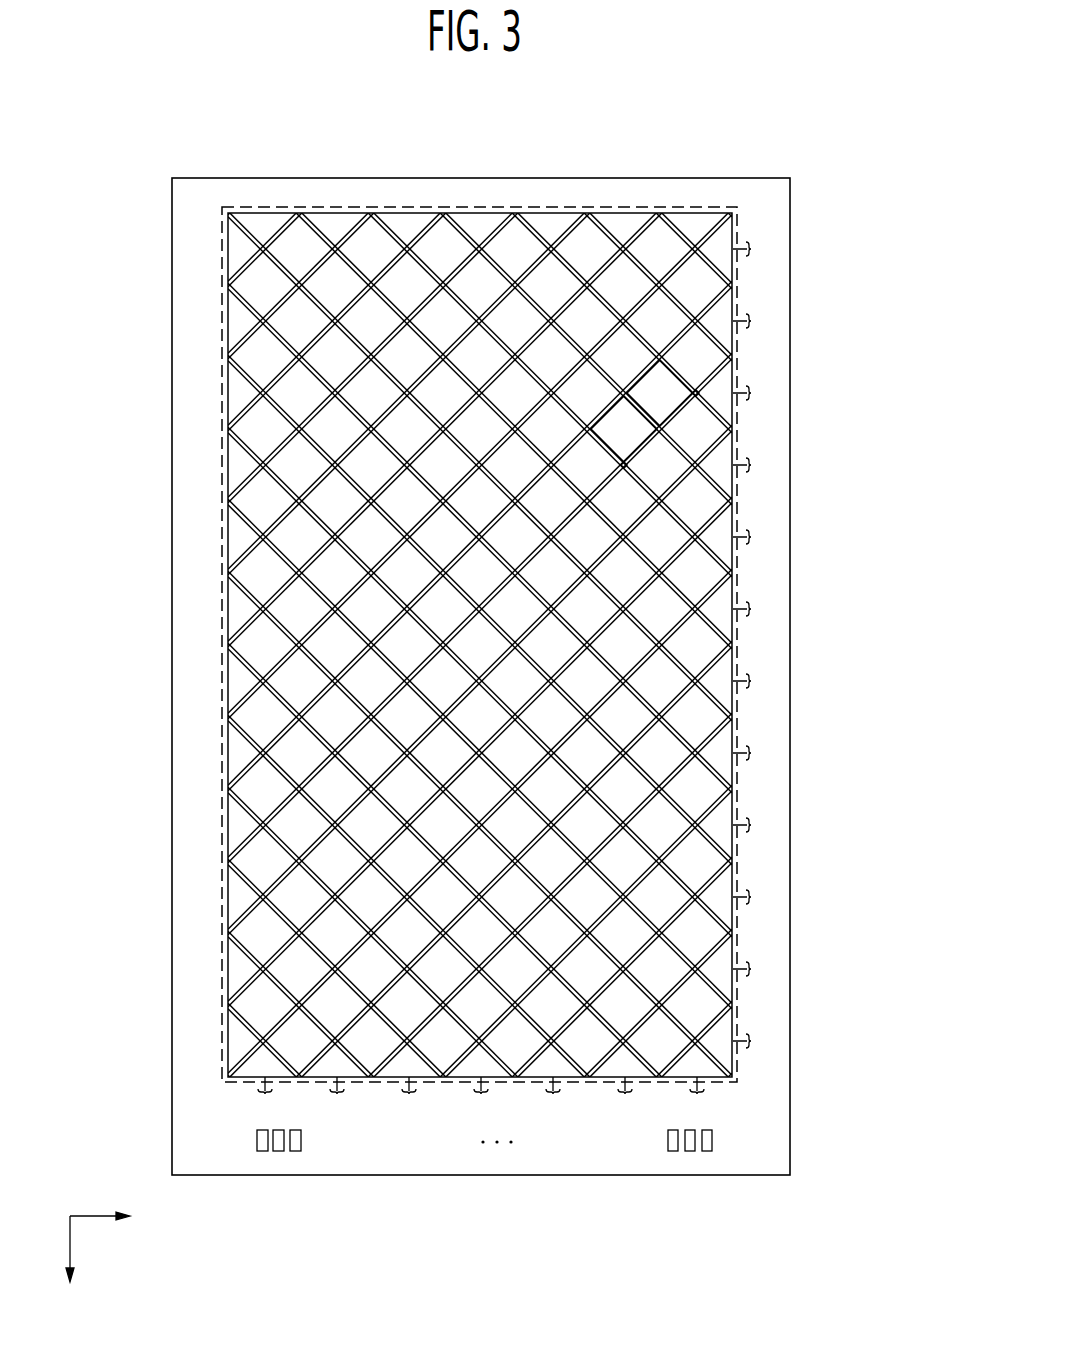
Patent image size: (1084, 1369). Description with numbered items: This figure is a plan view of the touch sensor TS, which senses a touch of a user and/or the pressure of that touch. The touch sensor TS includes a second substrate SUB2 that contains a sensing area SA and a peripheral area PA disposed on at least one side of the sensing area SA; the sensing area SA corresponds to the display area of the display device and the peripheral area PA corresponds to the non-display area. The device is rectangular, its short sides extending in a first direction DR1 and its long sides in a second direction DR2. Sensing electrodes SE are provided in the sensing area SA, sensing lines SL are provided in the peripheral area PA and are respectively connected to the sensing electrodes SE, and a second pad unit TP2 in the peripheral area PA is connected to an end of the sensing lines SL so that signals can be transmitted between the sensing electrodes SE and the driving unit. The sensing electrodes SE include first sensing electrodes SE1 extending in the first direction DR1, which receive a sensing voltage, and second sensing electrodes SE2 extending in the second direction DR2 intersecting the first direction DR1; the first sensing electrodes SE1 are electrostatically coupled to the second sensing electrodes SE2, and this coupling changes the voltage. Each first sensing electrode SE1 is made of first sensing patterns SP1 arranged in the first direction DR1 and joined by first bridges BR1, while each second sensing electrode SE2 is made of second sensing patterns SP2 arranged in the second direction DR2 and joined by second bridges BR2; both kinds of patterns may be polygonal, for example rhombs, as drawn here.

The touch sensor TS is at (793, 152).
The second substrate SUB2 is at (683, 178).
The sensing area SA is at (311, 210).
The peripheral area PA is at (483, 190).
The sensing electrodes SE is at (910, 370).
The first sensing electrodes SE1 is at (857, 352).
The second sensing electrodes SE2 is at (857, 437).
The first sensing patterns SP1 is at (670, 390).
The first bridges BR1 is at (702, 404).
The second sensing patterns SP2 is at (623, 433).
The second bridges BR2 is at (627, 465).
The sensing lines SL is at (748, 898).
The second pad unit TP2 is at (258, 1153).
The first direction DR1 is at (118, 1220).
The second direction DR2 is at (70, 1267).